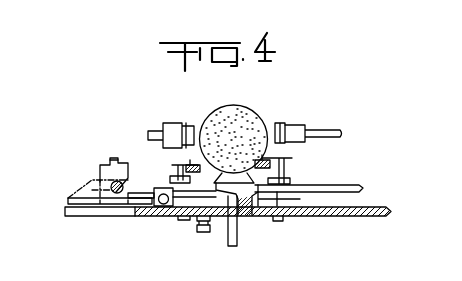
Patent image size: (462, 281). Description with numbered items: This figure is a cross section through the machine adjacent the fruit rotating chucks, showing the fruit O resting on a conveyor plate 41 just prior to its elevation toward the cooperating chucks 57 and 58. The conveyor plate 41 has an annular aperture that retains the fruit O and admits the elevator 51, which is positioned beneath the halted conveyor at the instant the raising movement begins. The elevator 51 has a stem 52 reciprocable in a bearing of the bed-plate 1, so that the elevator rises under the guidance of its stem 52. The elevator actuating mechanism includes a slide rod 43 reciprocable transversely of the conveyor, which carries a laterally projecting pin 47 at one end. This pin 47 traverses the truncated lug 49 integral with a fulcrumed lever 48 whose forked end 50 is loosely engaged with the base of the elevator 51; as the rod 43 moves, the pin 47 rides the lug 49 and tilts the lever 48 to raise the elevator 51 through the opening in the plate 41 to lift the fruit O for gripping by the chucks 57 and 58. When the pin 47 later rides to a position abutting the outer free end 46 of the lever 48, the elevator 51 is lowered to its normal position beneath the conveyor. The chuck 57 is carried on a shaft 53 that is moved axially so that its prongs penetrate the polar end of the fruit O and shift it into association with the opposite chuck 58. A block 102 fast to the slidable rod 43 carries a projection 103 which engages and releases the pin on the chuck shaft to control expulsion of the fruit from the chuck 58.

The bed-plate 1 is at (360, 212).
The conveyor plate 41 is at (292, 166).
The slide rod 43 is at (352, 188).
The outer free end of elevator-operating lever 46 is at (72, 198).
The laterally projecting pin 47 is at (124, 184).
The elevator-operating lever 48 is at (158, 212).
The truncated lug 49 is at (80, 184).
The forked end 50 is at (241, 200).
The elevator 51 is at (292, 199).
The stem 52 is at (233, 247).
The shaft 53 is at (332, 130).
The chuck 57 is at (284, 124).
The chuck 58 is at (174, 123).
The block 102 is at (98, 166).
The projection 103 is at (113, 159).
The fruit O is at (252, 115).